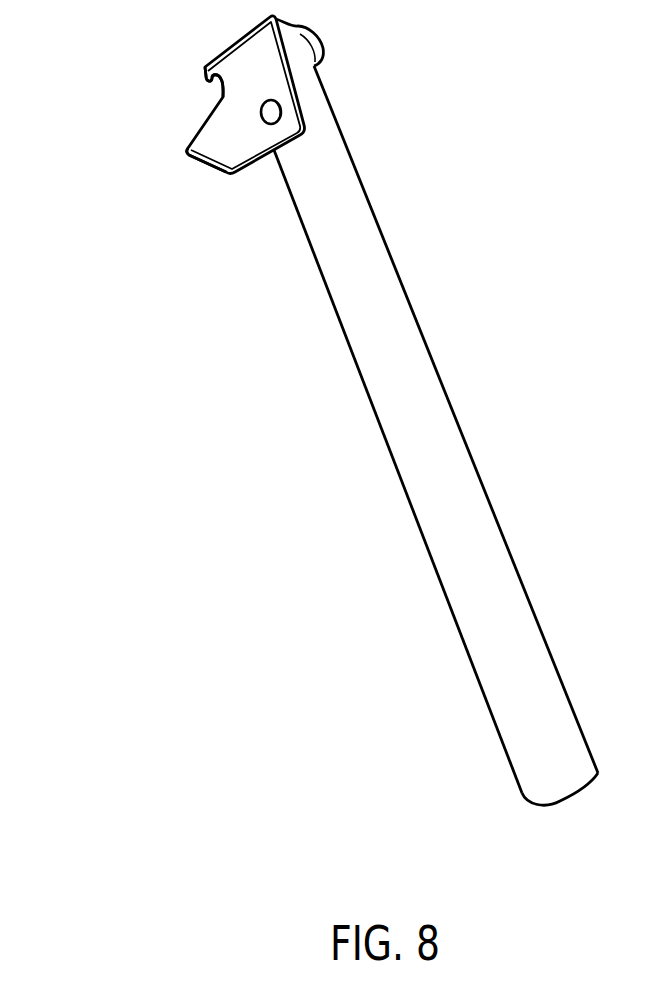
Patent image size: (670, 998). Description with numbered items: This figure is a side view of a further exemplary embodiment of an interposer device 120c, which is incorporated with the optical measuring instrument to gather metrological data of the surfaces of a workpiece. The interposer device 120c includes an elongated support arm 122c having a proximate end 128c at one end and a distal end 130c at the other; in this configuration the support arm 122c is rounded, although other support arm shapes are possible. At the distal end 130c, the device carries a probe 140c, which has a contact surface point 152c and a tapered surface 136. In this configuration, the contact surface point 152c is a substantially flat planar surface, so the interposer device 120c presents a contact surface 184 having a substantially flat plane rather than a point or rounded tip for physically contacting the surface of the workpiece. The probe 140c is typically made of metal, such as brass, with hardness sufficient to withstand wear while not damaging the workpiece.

The interposer device 120c is at (443, 412).
The support arm 122c is at (397, 267).
The proximate end 128c is at (573, 710).
The distal end 130c is at (355, 167).
The tapered surface 136 is at (197, 131).
The probe 140c is at (173, 144).
The contact surface point 152c is at (199, 160).
The contact surface 184 is at (198, 194).